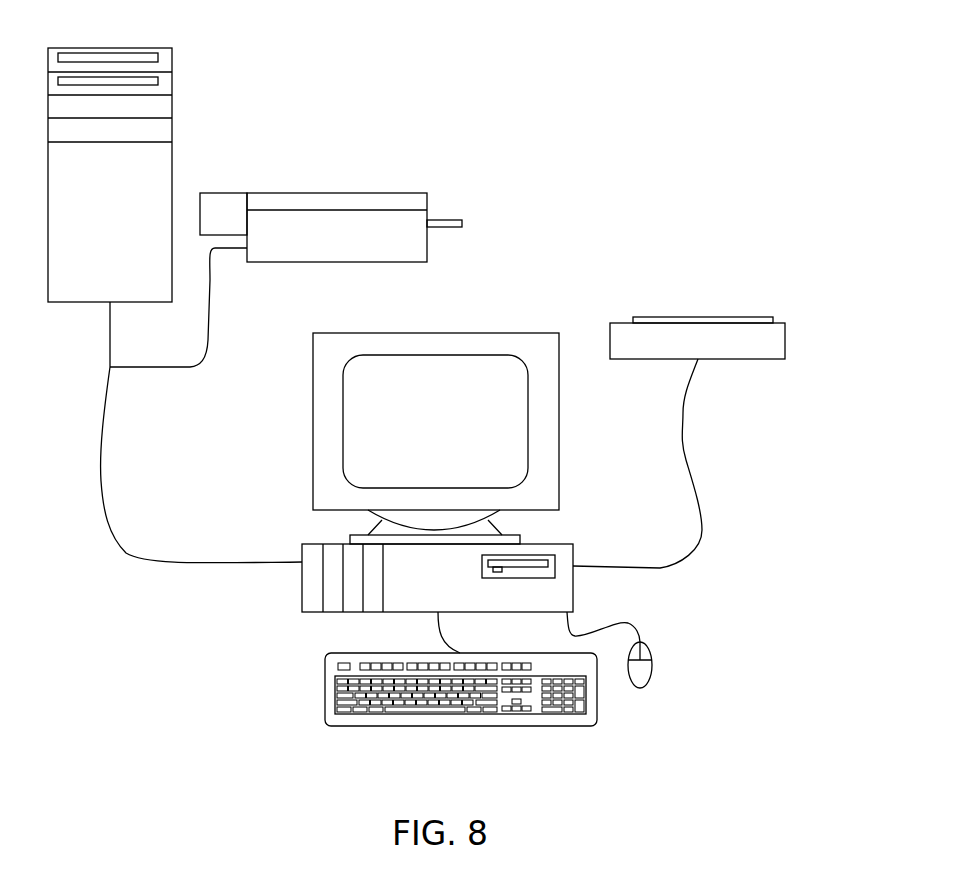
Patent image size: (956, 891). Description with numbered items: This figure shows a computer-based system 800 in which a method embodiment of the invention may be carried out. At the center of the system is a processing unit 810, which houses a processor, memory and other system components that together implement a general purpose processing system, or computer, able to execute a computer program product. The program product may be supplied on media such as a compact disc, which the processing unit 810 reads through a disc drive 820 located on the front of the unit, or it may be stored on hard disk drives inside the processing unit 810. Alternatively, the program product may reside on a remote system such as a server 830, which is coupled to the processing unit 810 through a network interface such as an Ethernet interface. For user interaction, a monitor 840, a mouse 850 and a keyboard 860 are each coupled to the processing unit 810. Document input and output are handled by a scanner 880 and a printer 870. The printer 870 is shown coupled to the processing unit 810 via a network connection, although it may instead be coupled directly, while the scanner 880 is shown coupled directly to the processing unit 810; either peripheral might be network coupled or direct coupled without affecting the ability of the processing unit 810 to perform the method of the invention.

The computer-based system 800 is at (556, 114).
The processing unit 810 is at (302, 595).
The disc drive 820 is at (556, 556).
The server 830 is at (172, 168).
The monitor 840 is at (512, 333).
The mouse 850 is at (652, 677).
The keyboard 860 is at (325, 691).
The printer 870 is at (382, 193).
The scanner 880 is at (725, 317).